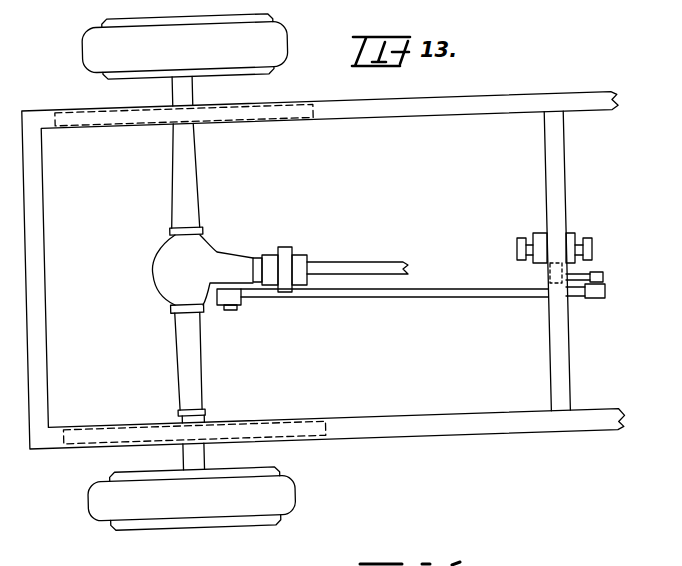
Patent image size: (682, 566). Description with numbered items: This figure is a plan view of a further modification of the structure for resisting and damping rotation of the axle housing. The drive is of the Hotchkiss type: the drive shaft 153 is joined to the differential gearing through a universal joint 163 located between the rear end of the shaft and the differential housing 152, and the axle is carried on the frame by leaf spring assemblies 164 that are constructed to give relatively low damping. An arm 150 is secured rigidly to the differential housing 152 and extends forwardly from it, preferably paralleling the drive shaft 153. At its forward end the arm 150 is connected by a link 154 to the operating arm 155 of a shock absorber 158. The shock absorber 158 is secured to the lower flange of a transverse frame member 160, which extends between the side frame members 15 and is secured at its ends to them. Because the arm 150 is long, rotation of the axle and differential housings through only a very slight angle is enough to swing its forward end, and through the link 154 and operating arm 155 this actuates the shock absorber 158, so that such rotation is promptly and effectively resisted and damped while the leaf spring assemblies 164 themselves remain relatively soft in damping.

The side frame members 15 is at (502, 100).
The leaf spring assemblies 164 is at (102, 122).
The transverse frame member 160 is at (567, 170).
The differential housing 152 is at (202, 258).
The universal joint 163 is at (293, 248).
The drive shaft 153 is at (370, 263).
The arm 150 is at (408, 297).
The shock absorber 158 is at (590, 233).
The operating arm 155 is at (597, 274).
The link 154 is at (606, 282).